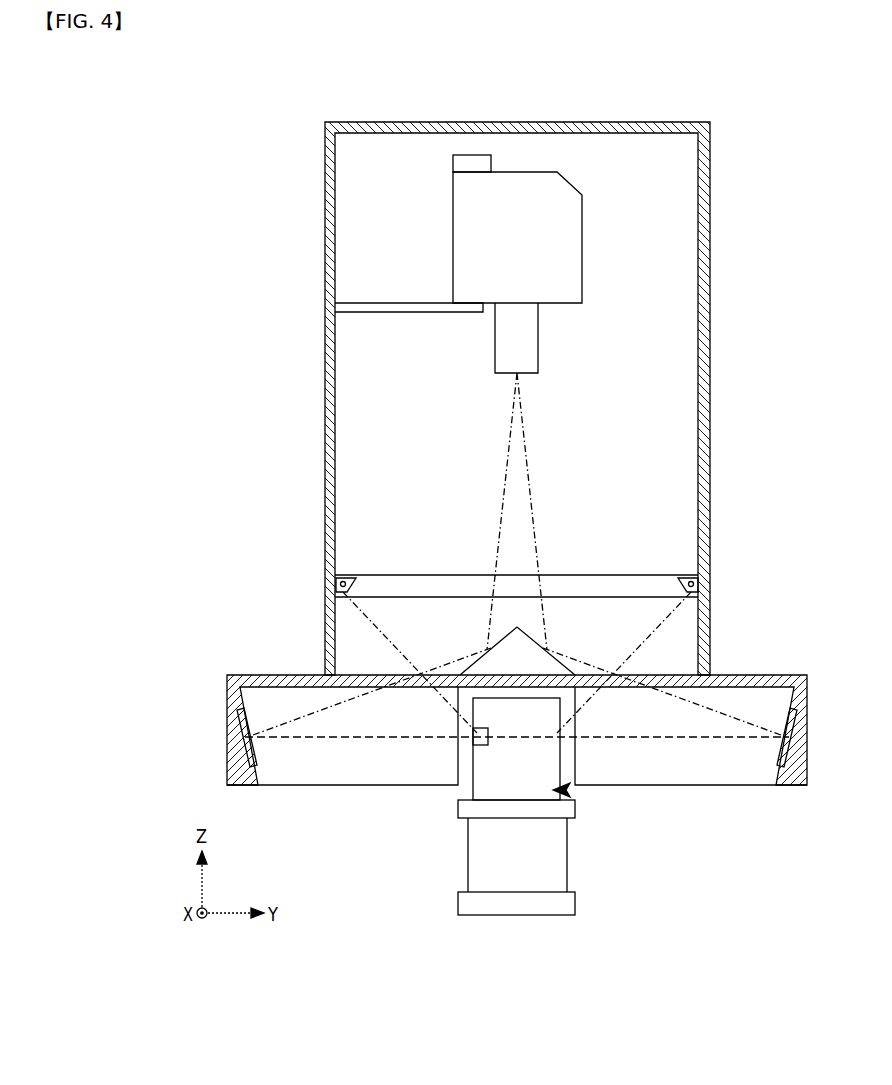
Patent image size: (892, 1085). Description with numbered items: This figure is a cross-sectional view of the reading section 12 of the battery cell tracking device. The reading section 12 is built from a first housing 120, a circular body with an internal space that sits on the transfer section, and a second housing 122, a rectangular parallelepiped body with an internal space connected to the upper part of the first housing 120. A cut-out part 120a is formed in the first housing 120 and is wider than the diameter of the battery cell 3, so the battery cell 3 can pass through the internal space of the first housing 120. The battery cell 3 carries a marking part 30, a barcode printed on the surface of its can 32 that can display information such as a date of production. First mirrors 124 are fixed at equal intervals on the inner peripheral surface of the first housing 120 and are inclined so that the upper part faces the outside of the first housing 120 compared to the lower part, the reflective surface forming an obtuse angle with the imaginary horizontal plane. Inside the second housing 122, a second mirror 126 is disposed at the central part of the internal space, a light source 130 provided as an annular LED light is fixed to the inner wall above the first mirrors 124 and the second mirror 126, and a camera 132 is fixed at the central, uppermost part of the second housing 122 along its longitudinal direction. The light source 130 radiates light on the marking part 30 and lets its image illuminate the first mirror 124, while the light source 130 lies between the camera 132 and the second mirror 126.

The reading section 12 is at (538, 105).
The second housing 122 is at (327, 415).
The camera 132 is at (570, 243).
The light source 130 is at (333, 592).
The second mirror 126 is at (525, 650).
The first housing 120 is at (227, 735).
The first mirror 124 is at (257, 753).
The cut-out part 120a is at (462, 772).
The can 32 is at (552, 757).
The marking part 30 is at (473, 740).
The battery cell 3 is at (568, 790).